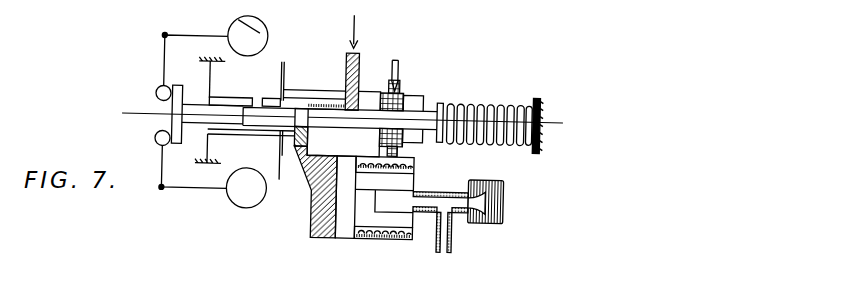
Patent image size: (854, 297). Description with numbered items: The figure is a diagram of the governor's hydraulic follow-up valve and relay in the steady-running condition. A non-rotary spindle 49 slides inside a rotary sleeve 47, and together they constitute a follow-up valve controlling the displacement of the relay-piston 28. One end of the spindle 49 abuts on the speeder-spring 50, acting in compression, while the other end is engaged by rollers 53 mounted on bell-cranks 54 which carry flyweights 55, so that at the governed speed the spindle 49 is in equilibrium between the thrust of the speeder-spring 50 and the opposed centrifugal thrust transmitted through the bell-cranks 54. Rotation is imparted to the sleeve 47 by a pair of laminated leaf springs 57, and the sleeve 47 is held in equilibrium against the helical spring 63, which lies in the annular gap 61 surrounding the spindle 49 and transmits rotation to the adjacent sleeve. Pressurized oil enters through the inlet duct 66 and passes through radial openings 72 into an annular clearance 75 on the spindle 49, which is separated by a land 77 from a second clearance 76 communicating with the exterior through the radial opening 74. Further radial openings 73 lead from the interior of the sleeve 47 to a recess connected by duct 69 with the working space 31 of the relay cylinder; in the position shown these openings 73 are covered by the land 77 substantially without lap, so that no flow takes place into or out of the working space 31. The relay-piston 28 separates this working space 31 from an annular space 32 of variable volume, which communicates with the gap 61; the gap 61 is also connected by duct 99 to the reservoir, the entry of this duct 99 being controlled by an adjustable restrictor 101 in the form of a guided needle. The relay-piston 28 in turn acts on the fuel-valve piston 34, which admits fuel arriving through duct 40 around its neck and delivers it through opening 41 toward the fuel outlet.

The relay-piston 28 is at (347, 230).
The working space 31 is at (327, 230).
The annular space 32 is at (388, 233).
The fuel-valve piston 34 is at (481, 207).
The duct 40 is at (445, 288).
The opening 41 is at (543, 203).
The rotary sleeve 47 is at (310, 100).
The non-rotary spindle 49 is at (196, 125).
The speeder-spring 50 is at (467, 101).
The rollers 53 is at (157, 93).
The bell-cranks 54 is at (163, 37).
The flyweights 55 is at (236, 24).
The laminated leaf springs 57 is at (207, 85).
The annular gap 61 is at (440, 100).
The helical spring 63 is at (395, 153).
The inlet duct 66 is at (356, 54).
The duct 69 is at (297, 158).
The radial openings 72 is at (347, 113).
The radial openings 73 is at (296, 139).
The radial opening 74 is at (251, 100).
The annular clearance 75 is at (333, 103).
The annular clearance 76 is at (279, 107).
The land 77 is at (302, 111).
The duct 99 is at (403, 101).
The adjustable restrictor 101 is at (396, 66).